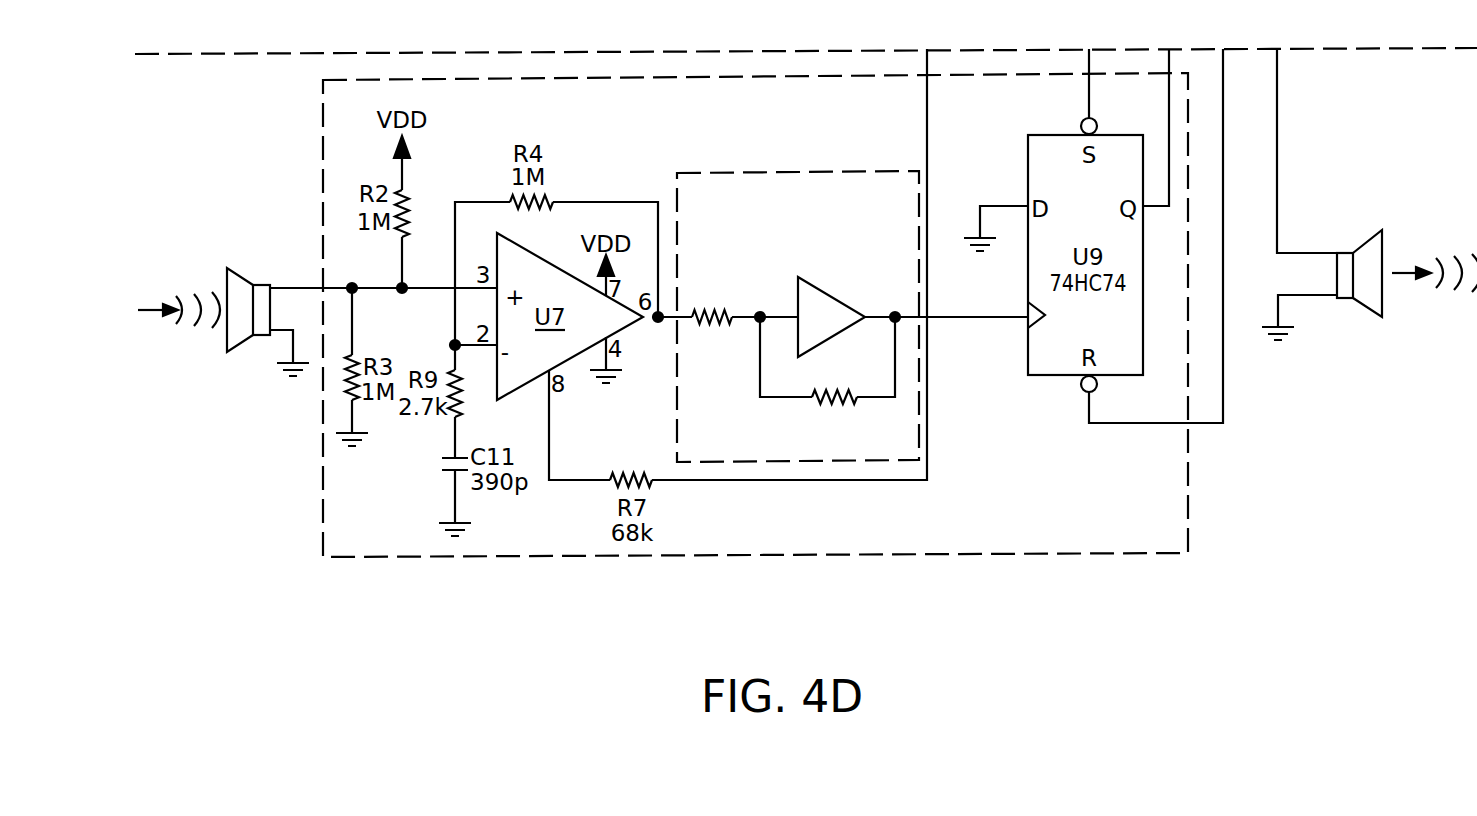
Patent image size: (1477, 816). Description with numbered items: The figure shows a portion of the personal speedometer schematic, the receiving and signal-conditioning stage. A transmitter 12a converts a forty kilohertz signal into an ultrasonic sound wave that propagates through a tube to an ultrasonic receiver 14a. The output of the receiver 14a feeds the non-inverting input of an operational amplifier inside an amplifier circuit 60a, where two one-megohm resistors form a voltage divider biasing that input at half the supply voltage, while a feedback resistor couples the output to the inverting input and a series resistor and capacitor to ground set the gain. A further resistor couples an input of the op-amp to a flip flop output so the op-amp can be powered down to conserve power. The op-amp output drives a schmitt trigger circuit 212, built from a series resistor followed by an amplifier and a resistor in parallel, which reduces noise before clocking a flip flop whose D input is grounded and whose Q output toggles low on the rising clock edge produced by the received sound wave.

The ultrasonic receiver 14a is at (265, 285).
The transmitter 12a is at (1343, 249).
The schmitt trigger circuit 212 is at (768, 173).
The amplifier circuit 60a is at (1025, 553).